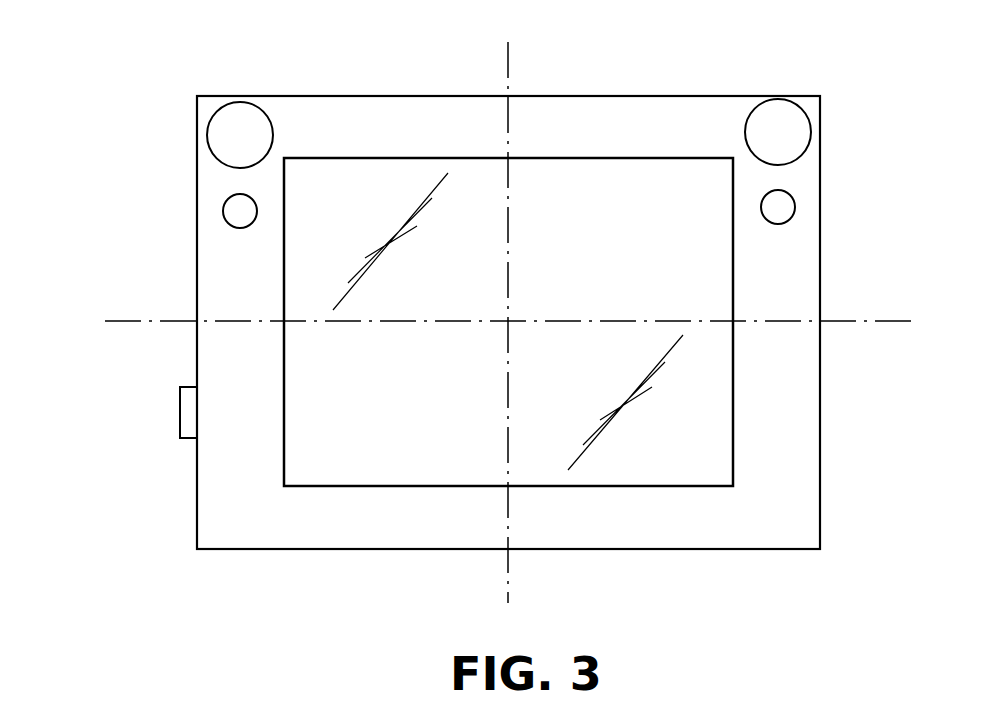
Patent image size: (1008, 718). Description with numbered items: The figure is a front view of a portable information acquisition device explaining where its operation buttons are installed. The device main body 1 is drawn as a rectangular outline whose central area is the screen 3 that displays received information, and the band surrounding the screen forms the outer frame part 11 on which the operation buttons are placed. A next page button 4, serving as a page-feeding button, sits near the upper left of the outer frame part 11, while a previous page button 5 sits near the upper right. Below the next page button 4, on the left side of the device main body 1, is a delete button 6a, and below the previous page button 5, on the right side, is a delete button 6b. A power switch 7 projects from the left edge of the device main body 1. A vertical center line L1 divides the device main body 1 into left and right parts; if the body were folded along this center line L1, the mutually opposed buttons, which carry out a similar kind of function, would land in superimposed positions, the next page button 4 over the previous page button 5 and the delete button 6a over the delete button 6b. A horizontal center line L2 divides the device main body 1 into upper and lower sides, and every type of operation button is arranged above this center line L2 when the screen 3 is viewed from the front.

The device main body 1 is at (97, 259).
The outer frame part 11 is at (332, 104).
The screen 3 is at (394, 192).
The next page button 4 is at (212, 137).
The previous page button 5 is at (811, 132).
The delete button 6a is at (232, 210).
The delete button 6b is at (795, 205).
The power switch 7 is at (180, 414).
The center line L1 is at (508, 62).
The center line L2 is at (890, 318).